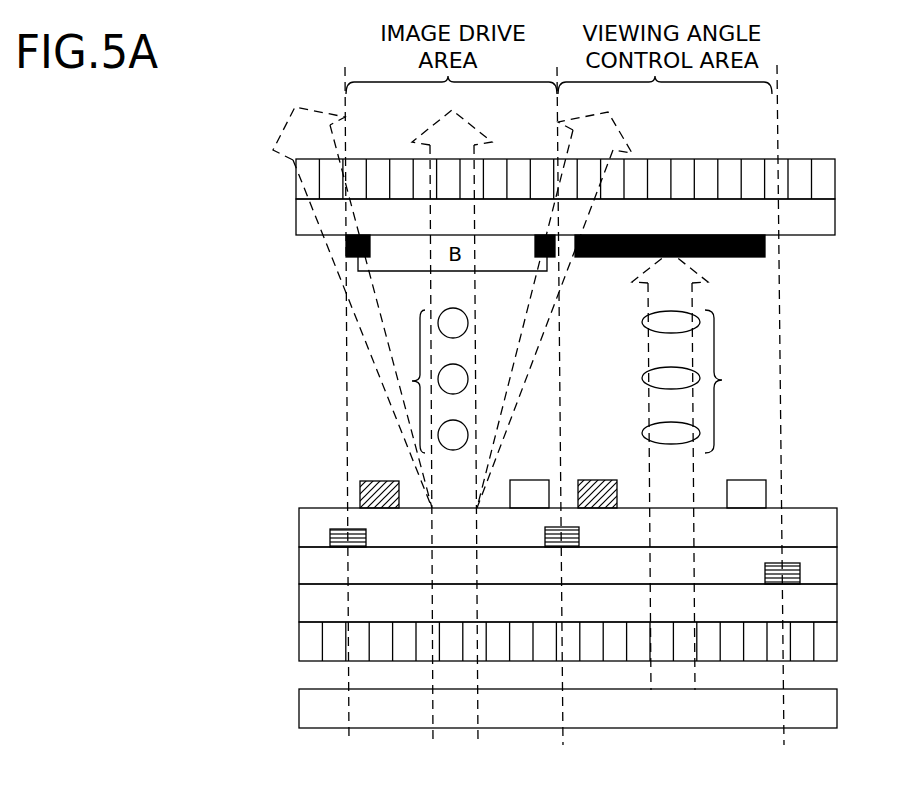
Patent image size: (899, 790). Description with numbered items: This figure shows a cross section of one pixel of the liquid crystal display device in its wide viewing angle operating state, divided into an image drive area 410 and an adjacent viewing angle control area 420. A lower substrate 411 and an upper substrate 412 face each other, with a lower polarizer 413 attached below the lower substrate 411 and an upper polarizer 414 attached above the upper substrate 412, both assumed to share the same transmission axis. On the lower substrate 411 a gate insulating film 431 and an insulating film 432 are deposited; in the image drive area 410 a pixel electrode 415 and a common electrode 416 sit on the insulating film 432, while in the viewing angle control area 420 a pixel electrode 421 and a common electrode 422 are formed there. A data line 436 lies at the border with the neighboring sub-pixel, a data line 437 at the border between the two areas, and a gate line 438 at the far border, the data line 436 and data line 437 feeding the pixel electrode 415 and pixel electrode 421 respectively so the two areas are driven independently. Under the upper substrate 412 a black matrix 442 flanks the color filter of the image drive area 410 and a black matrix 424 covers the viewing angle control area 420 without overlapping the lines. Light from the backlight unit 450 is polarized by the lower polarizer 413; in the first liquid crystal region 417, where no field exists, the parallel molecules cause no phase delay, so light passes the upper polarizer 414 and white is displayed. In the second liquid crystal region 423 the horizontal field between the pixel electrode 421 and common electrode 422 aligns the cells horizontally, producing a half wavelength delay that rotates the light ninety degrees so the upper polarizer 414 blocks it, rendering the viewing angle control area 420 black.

The image drive area 410 is at (367, 82).
The viewing angle control area 420 is at (568, 82).
The lower substrate 411 is at (299, 604).
The upper substrate 412 is at (296, 217).
The lower polarizer 413 is at (299, 642).
The upper polarizer 414 is at (296, 181).
The pixel electrode 415 is at (360, 481).
The common electrode 416 is at (528, 490).
The first liquid crystal region 417 is at (419, 380).
The pixel electrode 421 is at (598, 488).
The common electrode 422 is at (745, 490).
The second liquid crystal region 423 is at (703, 381).
The black matrix 424 is at (765, 257).
The gate insulating film 431 is at (299, 565).
The insulating film 432 is at (299, 528).
The data line 436 is at (330, 530).
The data line 437 is at (579, 531).
The gate line 438 is at (800, 569).
The black matrix 442 is at (345, 252).
The backlight unit 450 is at (299, 711).